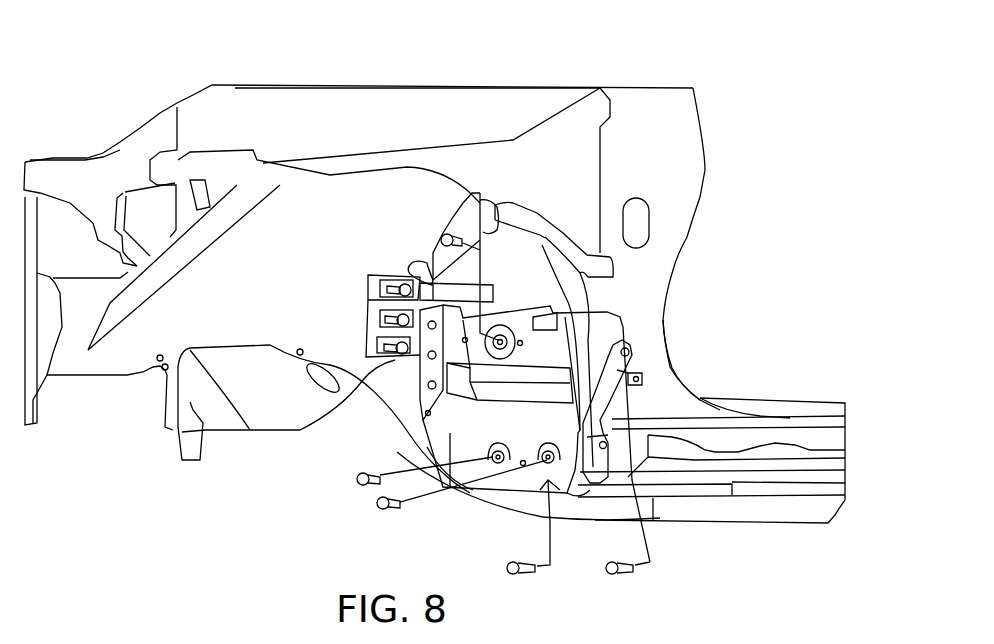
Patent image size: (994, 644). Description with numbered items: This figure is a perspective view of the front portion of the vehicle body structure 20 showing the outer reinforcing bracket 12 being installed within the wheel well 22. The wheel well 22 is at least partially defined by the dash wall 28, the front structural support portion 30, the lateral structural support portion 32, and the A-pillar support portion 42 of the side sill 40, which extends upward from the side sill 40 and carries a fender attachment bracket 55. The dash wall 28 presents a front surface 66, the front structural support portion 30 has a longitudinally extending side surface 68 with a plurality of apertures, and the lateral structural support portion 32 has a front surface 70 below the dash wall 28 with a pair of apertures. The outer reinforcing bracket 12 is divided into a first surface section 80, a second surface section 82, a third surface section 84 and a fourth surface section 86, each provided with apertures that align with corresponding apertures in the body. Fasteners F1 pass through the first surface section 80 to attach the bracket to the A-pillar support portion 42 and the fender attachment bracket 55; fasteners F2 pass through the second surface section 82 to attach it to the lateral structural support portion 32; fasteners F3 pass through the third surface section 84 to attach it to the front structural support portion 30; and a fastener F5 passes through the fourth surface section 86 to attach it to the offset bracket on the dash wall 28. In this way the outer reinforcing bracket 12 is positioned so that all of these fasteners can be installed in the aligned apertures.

The vehicle body structure 20 is at (576, 48).
The front surface of the dash wall 66 is at (518, 263).
The fastener F5 is at (441, 238).
The side surface of the front structural support portion 68 is at (413, 270).
The fasteners F3 is at (378, 343).
The dash wall 28 is at (545, 290).
The fourth surface section 86 is at (540, 355).
The third surface section 84 is at (427, 376).
The fender attachment bracket 55 is at (640, 363).
The A-pillar support portion 42 is at (668, 390).
The side sill 40 is at (788, 398).
The wheel well 22 is at (355, 400).
The front structural support portion 30 is at (430, 435).
The fasteners F2 is at (378, 505).
The outer reinforcing bracket 12 is at (460, 487).
The second surface section 82 is at (528, 448).
The lateral structural support portion 32 is at (545, 487).
The front surface of the lateral structural support portion 70 is at (568, 490).
The first surface section 80 is at (608, 350).
The fasteners F1 is at (515, 577).